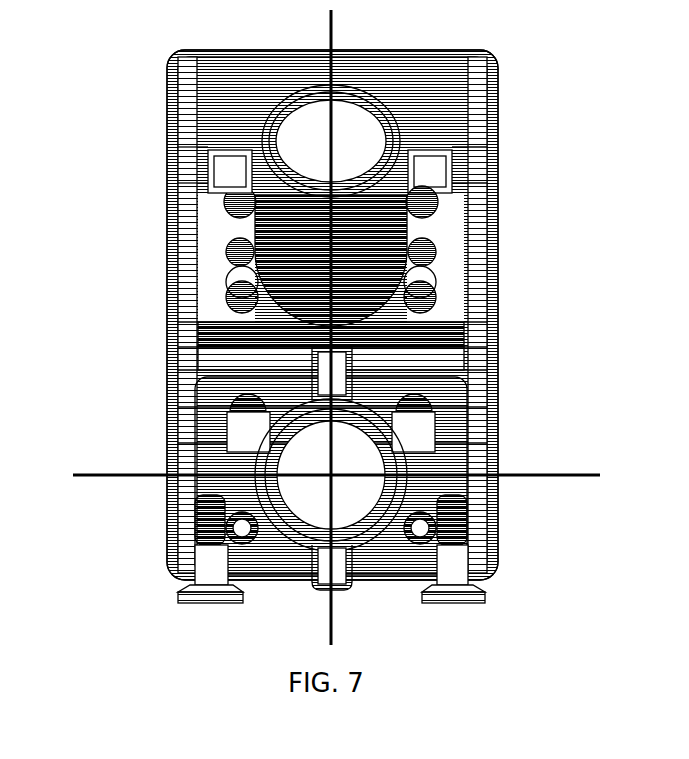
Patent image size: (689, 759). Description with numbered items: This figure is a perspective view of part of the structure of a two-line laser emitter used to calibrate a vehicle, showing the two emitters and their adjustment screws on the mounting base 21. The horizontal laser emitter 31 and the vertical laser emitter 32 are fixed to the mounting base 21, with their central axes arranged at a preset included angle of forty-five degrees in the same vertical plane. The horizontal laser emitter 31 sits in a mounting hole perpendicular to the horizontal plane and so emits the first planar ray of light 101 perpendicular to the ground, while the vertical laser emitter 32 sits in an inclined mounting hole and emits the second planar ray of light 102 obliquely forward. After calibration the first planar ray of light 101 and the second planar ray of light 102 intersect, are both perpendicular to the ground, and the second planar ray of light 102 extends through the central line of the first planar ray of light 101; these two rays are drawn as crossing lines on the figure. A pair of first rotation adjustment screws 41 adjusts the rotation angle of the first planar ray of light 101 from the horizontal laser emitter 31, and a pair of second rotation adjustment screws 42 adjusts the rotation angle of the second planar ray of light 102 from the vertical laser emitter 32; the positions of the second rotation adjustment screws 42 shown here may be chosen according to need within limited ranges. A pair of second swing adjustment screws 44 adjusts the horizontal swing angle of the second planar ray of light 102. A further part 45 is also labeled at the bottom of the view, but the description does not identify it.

The mounting base 21 is at (222, 103).
The vertical laser emitter 32 is at (275, 198).
The second rotation adjustment screws 42 is at (430, 150).
The second swing adjustment screws 44 is at (427, 176).
The horizontal laser emitter 31 is at (293, 462).
The first rotation adjustment screws 41 is at (432, 412).
The first planar ray of light 101 is at (142, 478).
The second planar ray of light 102 is at (331, 627).
The bottom protrusion 45 is at (350, 565).